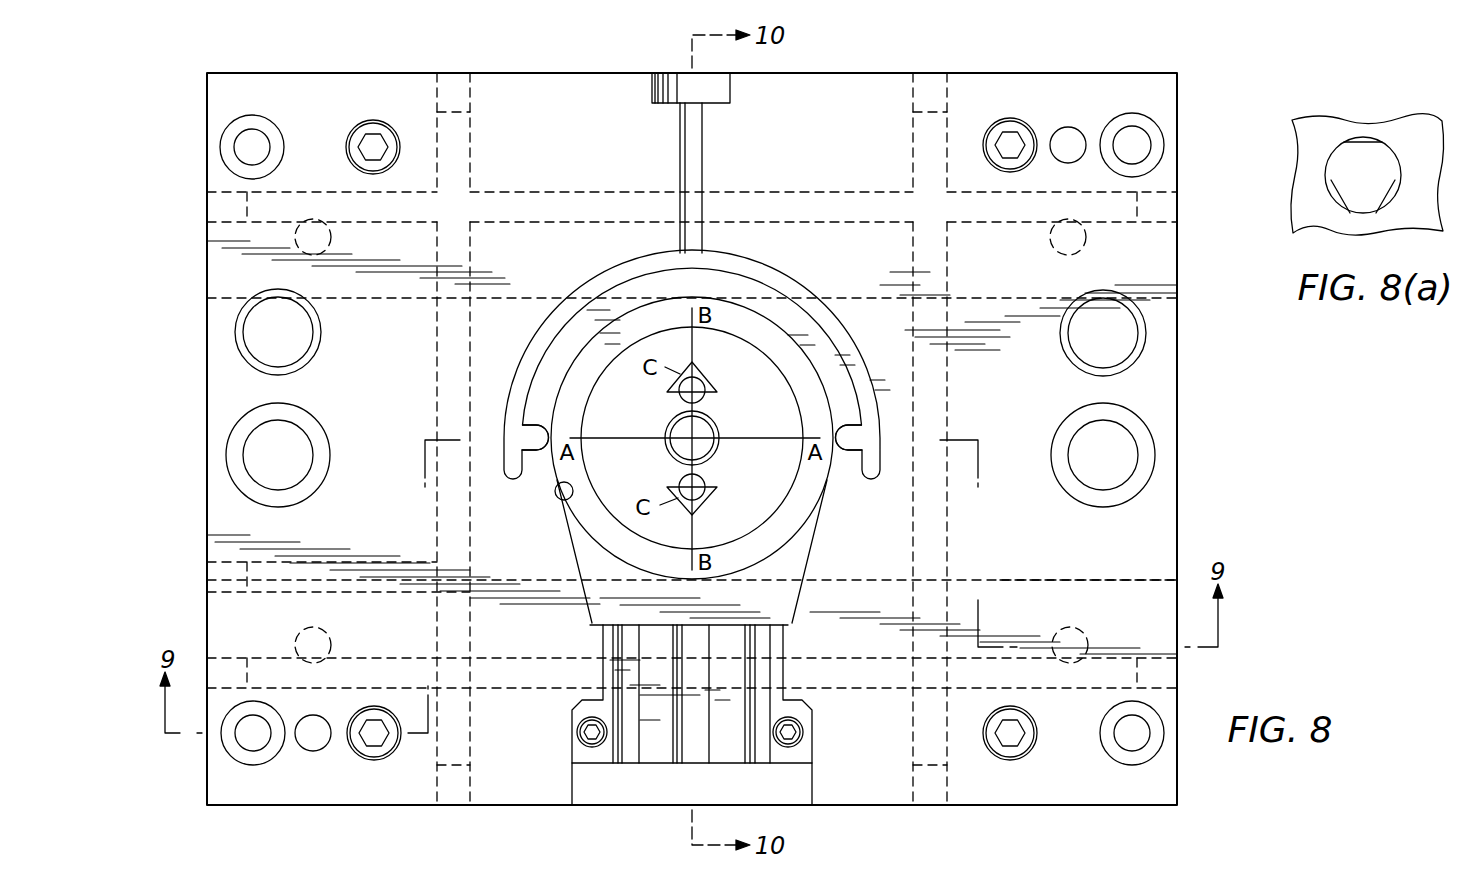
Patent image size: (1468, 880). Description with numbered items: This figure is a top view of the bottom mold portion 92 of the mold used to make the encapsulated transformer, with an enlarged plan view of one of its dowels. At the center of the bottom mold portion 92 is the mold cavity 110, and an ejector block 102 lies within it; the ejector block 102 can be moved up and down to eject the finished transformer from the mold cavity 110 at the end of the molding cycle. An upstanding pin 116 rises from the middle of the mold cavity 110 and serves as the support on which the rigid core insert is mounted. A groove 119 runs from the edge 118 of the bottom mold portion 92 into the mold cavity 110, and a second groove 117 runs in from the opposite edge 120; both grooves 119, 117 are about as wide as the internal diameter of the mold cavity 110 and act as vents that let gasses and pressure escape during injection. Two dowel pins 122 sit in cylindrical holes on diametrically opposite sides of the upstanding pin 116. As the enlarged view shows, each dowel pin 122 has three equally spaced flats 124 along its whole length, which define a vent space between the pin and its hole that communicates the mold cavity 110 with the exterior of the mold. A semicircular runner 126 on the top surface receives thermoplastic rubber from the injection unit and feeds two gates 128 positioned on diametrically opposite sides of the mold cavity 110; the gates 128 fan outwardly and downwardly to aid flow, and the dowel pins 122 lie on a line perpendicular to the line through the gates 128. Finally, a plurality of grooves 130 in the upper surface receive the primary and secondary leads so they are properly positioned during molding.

In FIG. 8, the bottom mold portion 92 is at (1062, 73).
In FIG. 8, the ejector block 102 is at (692, 461).
In FIG. 8, the mold cavity 110 is at (567, 497).
In FIG. 8, the upstanding pin 116 is at (718, 433).
In FIG. 8, the groove 117 is at (292, 578).
In FIG. 8, the edge 118 is at (1178, 338).
In FIG. 8, the groove 119 is at (1090, 578).
In FIG. 8, the opposite edge 120 is at (207, 393).
In FIG. 8, the dowel pins 122 is at (680, 398).
In FIG. 8A, the dowel pins 122 is at (1363, 175).
In FIG. 8A, the flats 124 is at (1363, 140).
In FIG. 8, the runner 126 is at (793, 275).
In FIG. 8, the gates 128 is at (535, 452).
In FIG. 8, the grooves 130 is at (628, 755).